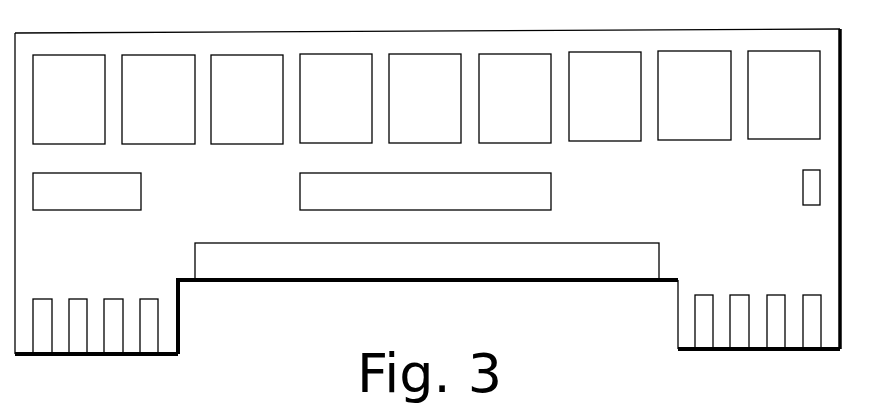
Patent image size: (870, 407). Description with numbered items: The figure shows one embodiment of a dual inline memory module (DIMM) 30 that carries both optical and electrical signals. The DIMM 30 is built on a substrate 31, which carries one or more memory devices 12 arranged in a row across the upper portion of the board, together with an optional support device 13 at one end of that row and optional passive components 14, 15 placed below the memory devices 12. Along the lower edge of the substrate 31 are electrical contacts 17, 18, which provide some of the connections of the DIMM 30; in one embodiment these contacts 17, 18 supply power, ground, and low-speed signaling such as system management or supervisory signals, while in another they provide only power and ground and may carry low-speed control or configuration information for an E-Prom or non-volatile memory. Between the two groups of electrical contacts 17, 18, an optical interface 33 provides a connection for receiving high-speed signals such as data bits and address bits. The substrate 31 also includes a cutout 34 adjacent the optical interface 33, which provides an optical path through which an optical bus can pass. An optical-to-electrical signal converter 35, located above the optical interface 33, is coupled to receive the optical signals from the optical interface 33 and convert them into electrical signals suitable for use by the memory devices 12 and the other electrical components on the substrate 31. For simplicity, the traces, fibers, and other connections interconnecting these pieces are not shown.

The memory devices 12 is at (382, 97).
The support devices 13 is at (784, 95).
The passive component 14 is at (87, 191).
The passive component 15 is at (803, 183).
The electrical contacts 17 is at (148, 299).
The electrical contacts 18 is at (78, 299).
The dual inline memory module (DIMM) 30 is at (592, 351).
The substrate 31 is at (336, 29).
The optical interface 33 is at (427, 261).
The cutout 34 is at (180, 284).
The optical-to-electrical signal converter 35 is at (425, 191).